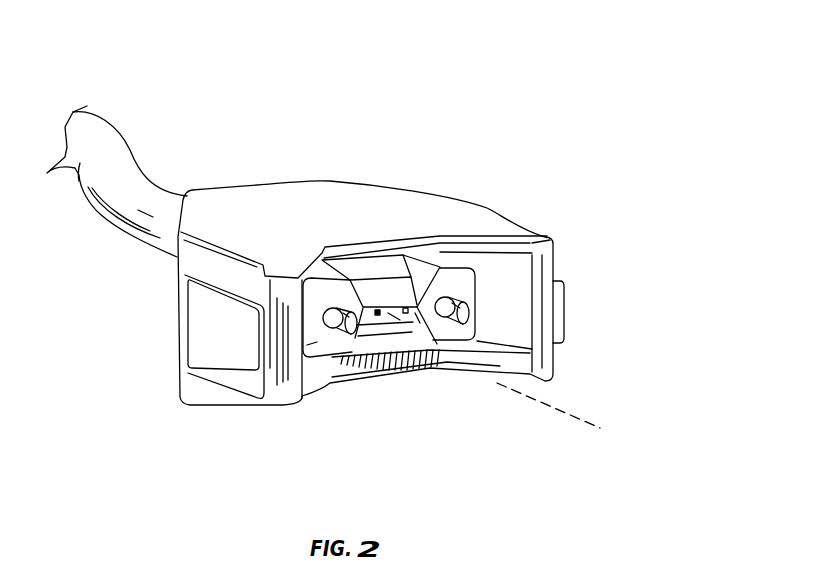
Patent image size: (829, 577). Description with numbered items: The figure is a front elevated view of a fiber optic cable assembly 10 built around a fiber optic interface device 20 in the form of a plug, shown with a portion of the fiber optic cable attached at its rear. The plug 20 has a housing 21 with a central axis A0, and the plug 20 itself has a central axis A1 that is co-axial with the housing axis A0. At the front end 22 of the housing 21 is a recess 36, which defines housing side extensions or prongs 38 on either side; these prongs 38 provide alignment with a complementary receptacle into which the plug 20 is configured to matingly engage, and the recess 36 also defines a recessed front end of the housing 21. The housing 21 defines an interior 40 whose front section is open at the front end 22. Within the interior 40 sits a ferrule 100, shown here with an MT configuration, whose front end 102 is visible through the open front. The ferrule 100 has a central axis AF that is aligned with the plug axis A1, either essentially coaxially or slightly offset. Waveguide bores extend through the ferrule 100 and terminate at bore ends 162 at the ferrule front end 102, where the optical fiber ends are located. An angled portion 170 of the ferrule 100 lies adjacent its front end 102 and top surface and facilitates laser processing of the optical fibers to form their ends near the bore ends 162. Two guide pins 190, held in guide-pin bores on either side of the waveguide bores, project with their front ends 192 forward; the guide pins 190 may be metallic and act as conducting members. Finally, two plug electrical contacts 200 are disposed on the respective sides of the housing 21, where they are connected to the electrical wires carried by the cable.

The fiber optic cable assembly 10 is at (545, 62).
The fiber optic interface device 20 is at (438, 173).
The housing 21 is at (365, 207).
The front end 22 is at (317, 412).
The recess 36 is at (432, 382).
The prongs 38 is at (277, 293).
The interior 40 is at (503, 313).
The ferrule 100 is at (440, 270).
The front end 102 is at (325, 362).
The bore ends 162 is at (405, 317).
The angled portion 170 is at (378, 297).
The guide pins 190 is at (323, 320).
The front ends 192 is at (389, 317).
The plug electrical contacts 200 is at (205, 315).
The central axis A0 is at (621, 405).
The central axis A1 is at (548, 405).
The central axis AF is at (570, 405).